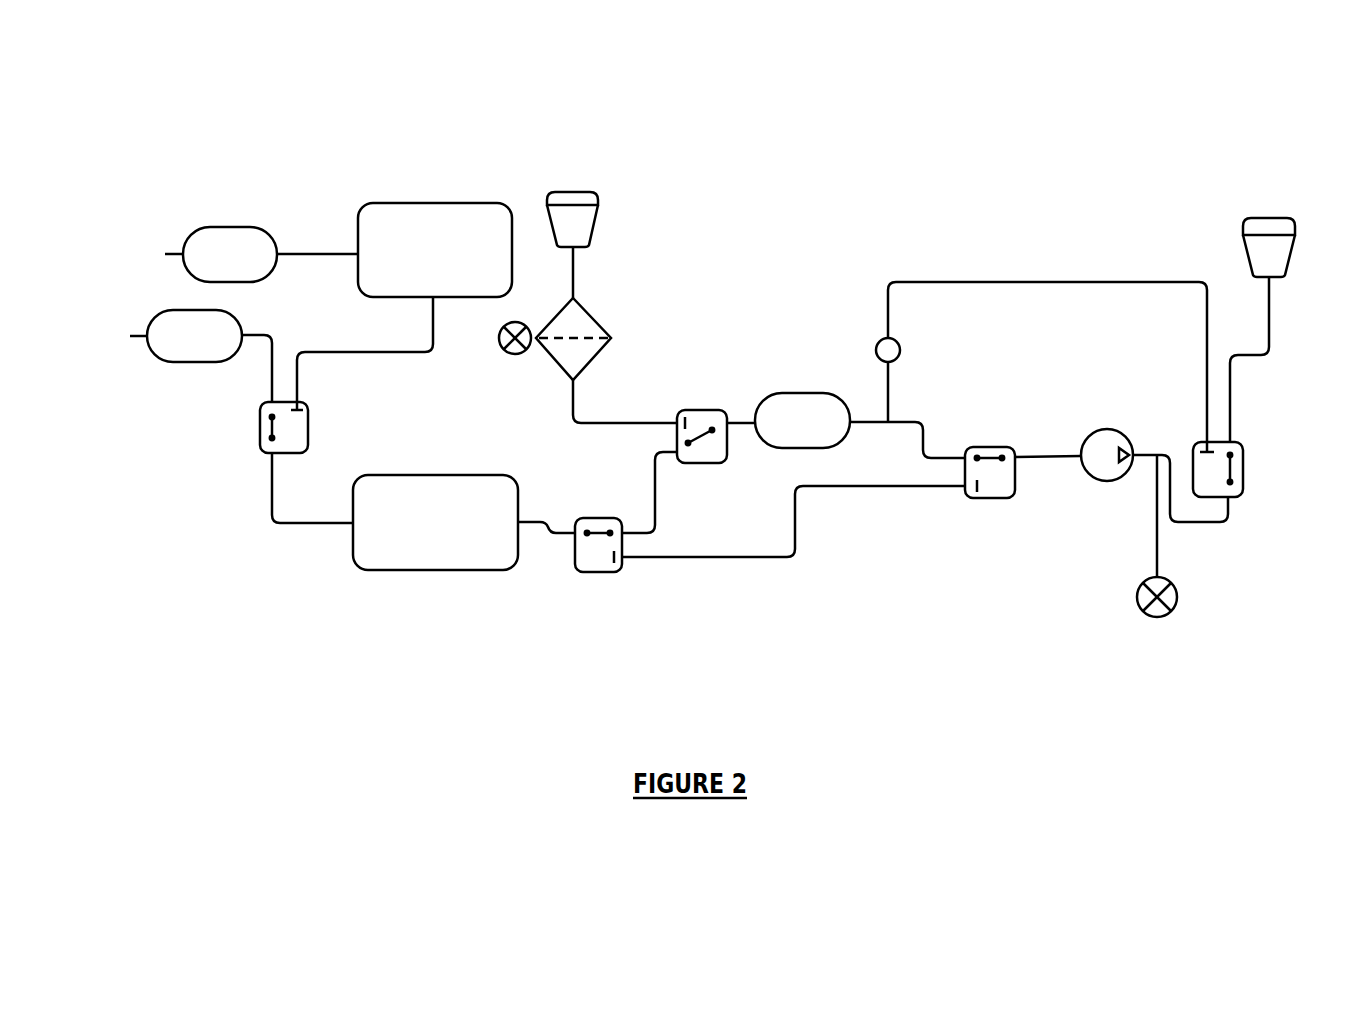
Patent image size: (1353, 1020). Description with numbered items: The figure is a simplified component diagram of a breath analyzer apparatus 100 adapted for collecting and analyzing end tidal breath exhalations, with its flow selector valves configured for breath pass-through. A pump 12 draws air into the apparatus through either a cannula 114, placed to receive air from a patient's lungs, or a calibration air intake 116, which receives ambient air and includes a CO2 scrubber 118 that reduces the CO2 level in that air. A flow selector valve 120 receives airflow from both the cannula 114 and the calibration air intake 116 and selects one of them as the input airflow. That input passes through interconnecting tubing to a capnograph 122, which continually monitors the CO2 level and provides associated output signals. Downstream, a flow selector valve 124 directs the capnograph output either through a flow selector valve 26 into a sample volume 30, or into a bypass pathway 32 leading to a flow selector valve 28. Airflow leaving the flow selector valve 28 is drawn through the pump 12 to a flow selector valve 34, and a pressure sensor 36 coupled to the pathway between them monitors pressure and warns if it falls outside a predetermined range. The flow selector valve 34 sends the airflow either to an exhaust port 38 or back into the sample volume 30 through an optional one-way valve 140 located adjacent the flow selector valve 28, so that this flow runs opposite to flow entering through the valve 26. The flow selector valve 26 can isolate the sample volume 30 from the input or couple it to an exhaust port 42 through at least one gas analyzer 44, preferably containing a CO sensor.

The apparatus 100 is at (262, 589).
The calibration air intake 116 is at (220, 220).
The CO2 scrubber 118 is at (435, 250).
The cannula 114 is at (207, 362).
The flow selector valve 120 is at (323, 423).
The capnograph 122 is at (435, 522).
The flow selector valve 124 is at (573, 573).
The flow selector valve 26 is at (702, 397).
The sample volume 30 is at (790, 387).
The exhaust port 42 is at (575, 192).
The gas analyzer 44 is at (600, 323).
The one-way valve 140 is at (903, 342).
The pump 12 is at (1107, 418).
The flow selector valve 28 is at (978, 512).
The bypass pathway 32 is at (767, 560).
The flow selector valve 34 is at (1247, 493).
The pressure sensor 36 is at (1138, 600).
The exhaust port 38 is at (1267, 220).